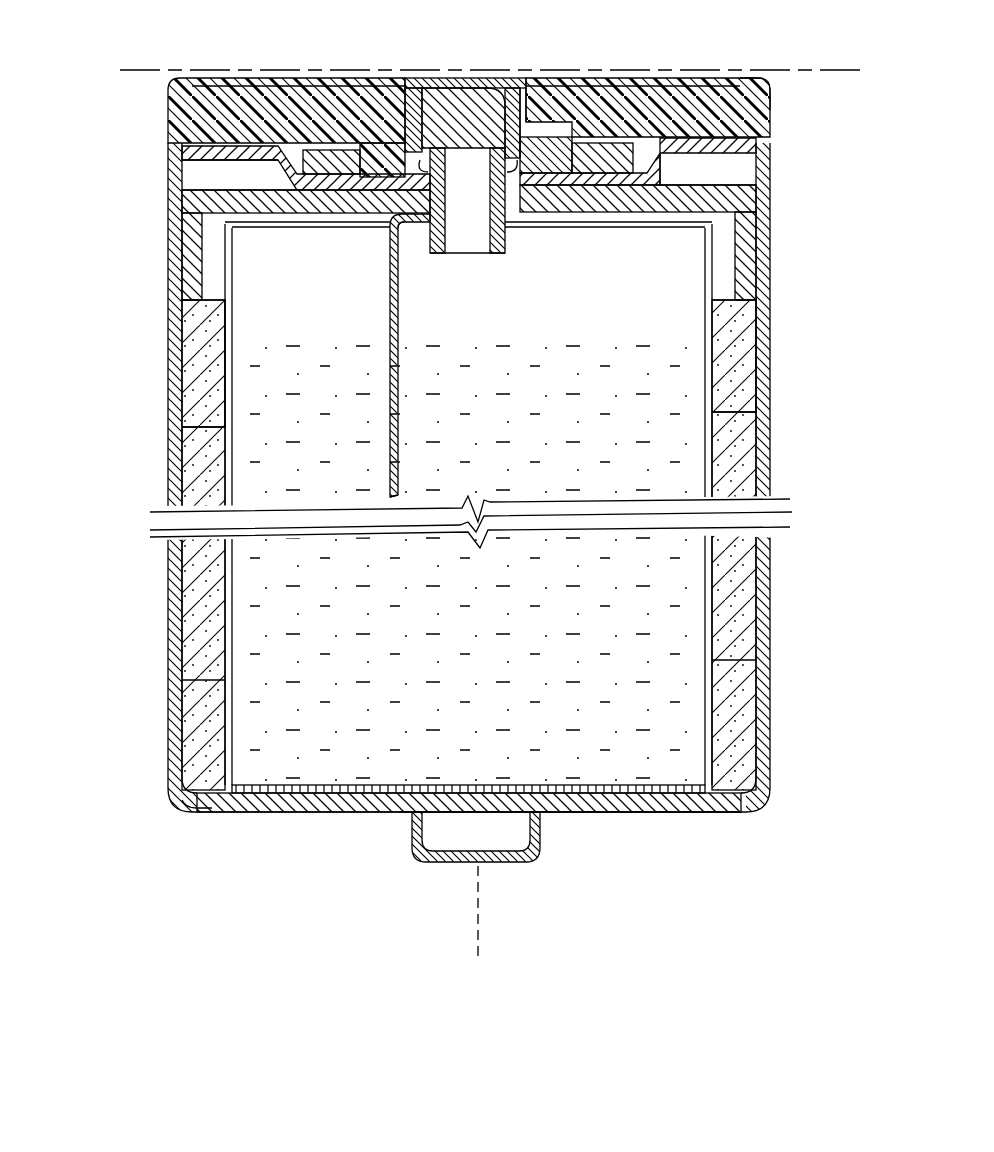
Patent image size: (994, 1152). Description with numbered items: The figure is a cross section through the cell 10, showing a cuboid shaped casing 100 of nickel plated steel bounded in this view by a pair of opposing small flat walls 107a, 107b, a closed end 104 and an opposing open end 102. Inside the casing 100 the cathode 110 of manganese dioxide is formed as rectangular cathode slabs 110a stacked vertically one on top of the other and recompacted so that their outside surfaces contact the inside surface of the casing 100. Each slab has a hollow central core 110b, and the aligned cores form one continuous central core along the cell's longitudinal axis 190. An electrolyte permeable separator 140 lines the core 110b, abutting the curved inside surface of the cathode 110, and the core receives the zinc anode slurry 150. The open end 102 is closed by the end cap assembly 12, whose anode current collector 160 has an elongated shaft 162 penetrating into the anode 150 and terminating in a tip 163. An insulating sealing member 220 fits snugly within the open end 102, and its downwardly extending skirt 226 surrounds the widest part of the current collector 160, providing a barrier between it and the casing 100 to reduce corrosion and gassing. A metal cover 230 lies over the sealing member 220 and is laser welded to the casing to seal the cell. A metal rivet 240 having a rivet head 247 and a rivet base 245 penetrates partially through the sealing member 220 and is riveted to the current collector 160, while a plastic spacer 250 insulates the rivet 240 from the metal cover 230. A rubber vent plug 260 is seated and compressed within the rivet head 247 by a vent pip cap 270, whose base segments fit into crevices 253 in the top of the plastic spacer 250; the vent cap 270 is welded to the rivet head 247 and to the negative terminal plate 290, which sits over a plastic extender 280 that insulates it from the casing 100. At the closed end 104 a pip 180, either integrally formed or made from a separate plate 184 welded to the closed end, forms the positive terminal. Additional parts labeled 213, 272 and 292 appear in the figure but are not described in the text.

The cell 10 is at (132, 55).
The end cap assembly 12 is at (461, 158).
The casing 100 is at (167, 293).
The open end 102 is at (185, 170).
The closed end 104 is at (210, 812).
The small flat wall 107a is at (185, 414).
The small flat wall 107b is at (772, 390).
The cathode 110 is at (470, 545).
The cathode slab 110a is at (192, 484).
The hollow central core 110b is at (700, 537).
The separator 140 is at (242, 792).
The anode 150 is at (287, 780).
The anode current collector 160 is at (396, 355).
The shaft 162 is at (402, 288).
The tip 163 is at (400, 497).
The pip 180 is at (500, 862).
The separate plate 184 is at (580, 810).
The longitudinal axis 190 is at (478, 950).
The lid insert block 213 is at (367, 145).
The insulating sealing member 220 is at (190, 235).
The skirt 226 is at (190, 262).
The metal cover 230 is at (760, 158).
The metal rivet 240 is at (505, 235).
The rivet base 245 is at (495, 255).
The rivet head 247 is at (528, 92).
The plastic spacer 250 is at (760, 182).
The crevices 253 is at (575, 168).
The rubber vent plug 260 is at (458, 100).
The vent pip cap 270 is at (518, 95).
The sleeve 272 is at (440, 85).
The plastic extender 280 is at (770, 100).
The negative terminal plate 290 is at (272, 80).
The cap right portion 292 is at (600, 82).